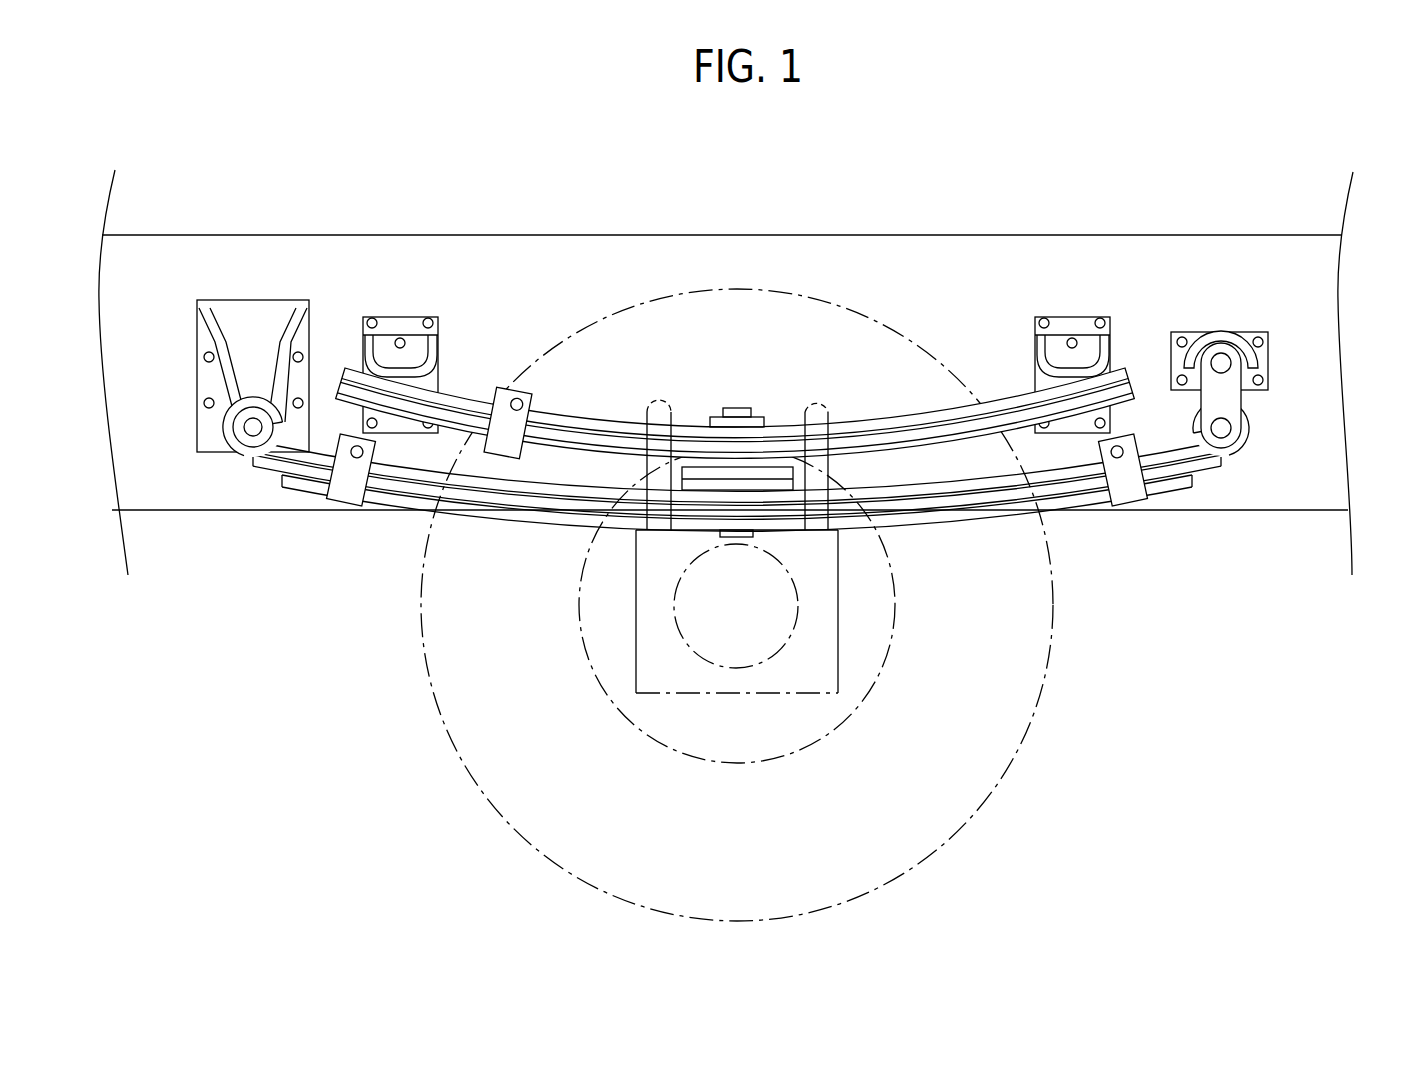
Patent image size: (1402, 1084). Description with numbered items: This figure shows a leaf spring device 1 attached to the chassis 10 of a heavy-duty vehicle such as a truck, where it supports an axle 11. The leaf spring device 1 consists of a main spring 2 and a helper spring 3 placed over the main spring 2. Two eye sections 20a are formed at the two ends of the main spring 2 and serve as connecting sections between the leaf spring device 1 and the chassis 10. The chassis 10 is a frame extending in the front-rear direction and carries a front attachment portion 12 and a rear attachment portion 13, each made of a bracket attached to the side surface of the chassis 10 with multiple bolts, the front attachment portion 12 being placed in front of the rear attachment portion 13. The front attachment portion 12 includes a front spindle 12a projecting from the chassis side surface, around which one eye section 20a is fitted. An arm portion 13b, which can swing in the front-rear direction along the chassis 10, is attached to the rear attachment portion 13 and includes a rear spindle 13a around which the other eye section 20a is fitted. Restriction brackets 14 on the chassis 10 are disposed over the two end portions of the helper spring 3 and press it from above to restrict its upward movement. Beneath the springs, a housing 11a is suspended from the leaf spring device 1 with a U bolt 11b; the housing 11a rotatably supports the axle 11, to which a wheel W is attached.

The leaf spring device 1 is at (769, 359).
The main spring 2 is at (769, 384).
The helper spring 3 is at (866, 408).
The chassis 10 is at (1263, 235).
The axle 11 is at (792, 749).
The housing 11a is at (814, 694).
The U bolt 11b is at (659, 403).
The front attachment portion 12 is at (236, 300).
The front spindle 12a is at (253, 427).
The rear attachment portion 13 is at (1222, 330).
The rear spindle 13a is at (1220, 430).
The arm portion 13b is at (1245, 370).
The restriction bracket 14 is at (388, 315).
The eye section 20a is at (267, 437).
The wheel W is at (980, 802).